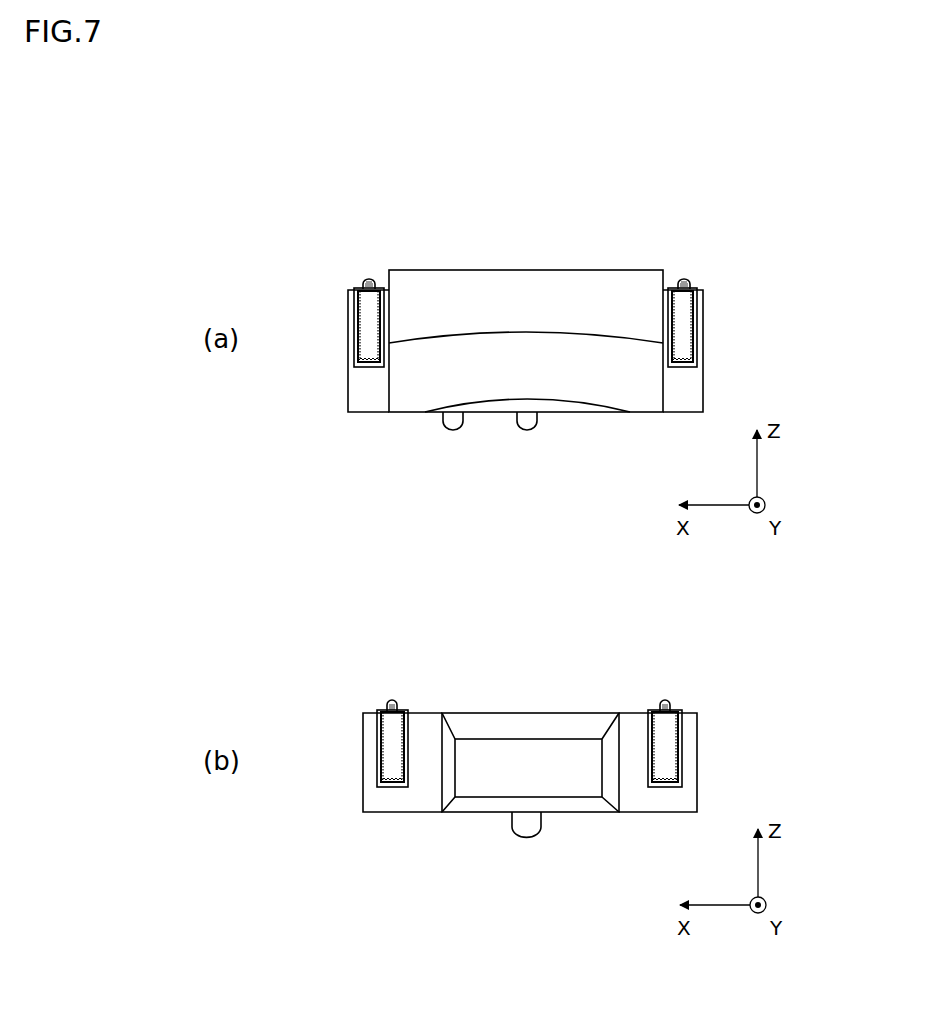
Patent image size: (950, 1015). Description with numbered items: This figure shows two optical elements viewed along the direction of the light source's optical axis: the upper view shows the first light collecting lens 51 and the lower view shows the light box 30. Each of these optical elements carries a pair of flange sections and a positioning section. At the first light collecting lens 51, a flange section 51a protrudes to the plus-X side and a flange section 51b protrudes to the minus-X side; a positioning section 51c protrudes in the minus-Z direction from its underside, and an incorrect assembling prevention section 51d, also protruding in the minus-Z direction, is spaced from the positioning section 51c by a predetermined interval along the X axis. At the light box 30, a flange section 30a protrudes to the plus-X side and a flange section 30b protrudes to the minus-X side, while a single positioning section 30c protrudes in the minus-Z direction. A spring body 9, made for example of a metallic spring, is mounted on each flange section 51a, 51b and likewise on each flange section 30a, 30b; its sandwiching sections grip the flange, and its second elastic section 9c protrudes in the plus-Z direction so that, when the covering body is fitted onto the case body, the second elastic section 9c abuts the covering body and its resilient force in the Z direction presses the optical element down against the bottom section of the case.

The spring body 9 is at (351, 283).
The second elastic section 9c is at (370, 281).
The first light collecting lens 51 is at (539, 260).
The flange section 51a is at (368, 390).
The flange section 51b is at (686, 390).
The positioning section 51c is at (526, 433).
The incorrect assembling prevention section 51d is at (447, 433).
The light box 30 is at (528, 705).
The flange section 30a is at (380, 798).
The flange section 30b is at (672, 800).
The positioning section 30c is at (525, 840).